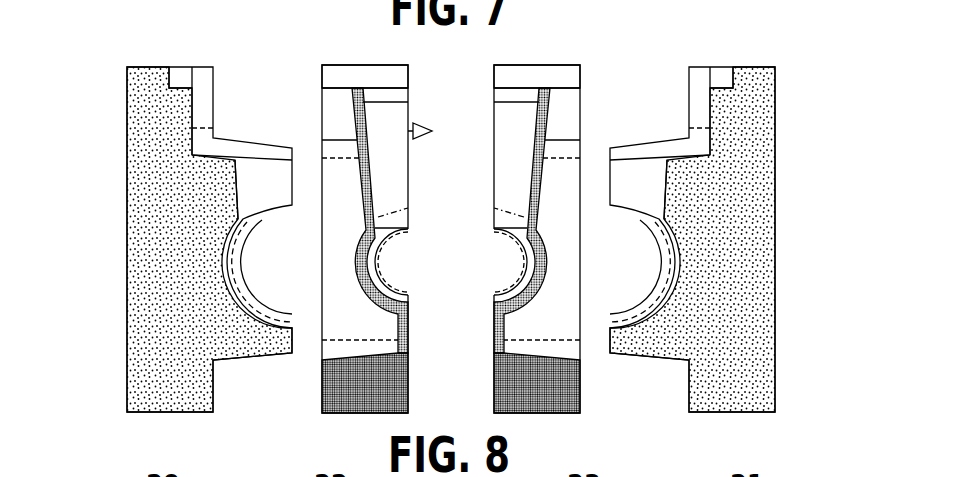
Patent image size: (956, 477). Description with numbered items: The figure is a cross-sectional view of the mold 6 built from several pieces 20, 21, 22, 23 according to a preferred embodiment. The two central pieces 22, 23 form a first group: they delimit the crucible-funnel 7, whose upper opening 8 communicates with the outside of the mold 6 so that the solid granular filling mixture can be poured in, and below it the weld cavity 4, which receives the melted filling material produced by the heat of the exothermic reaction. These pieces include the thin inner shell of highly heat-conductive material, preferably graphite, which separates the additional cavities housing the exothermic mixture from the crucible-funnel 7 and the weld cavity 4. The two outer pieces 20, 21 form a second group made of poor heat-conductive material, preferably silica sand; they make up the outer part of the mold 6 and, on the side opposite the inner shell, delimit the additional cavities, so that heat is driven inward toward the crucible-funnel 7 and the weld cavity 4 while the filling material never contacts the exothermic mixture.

The weld cavity 4 is at (527, 262).
The mold 6 is at (787, 270).
The crucible-funnel 7 is at (517, 175).
The upper opening 8 is at (495, 110).
The piece of second group 20 is at (177, 207).
The piece of second group 21 is at (726, 206).
The piece of first group 22 is at (341, 207).
The piece of first group 23 is at (572, 207).